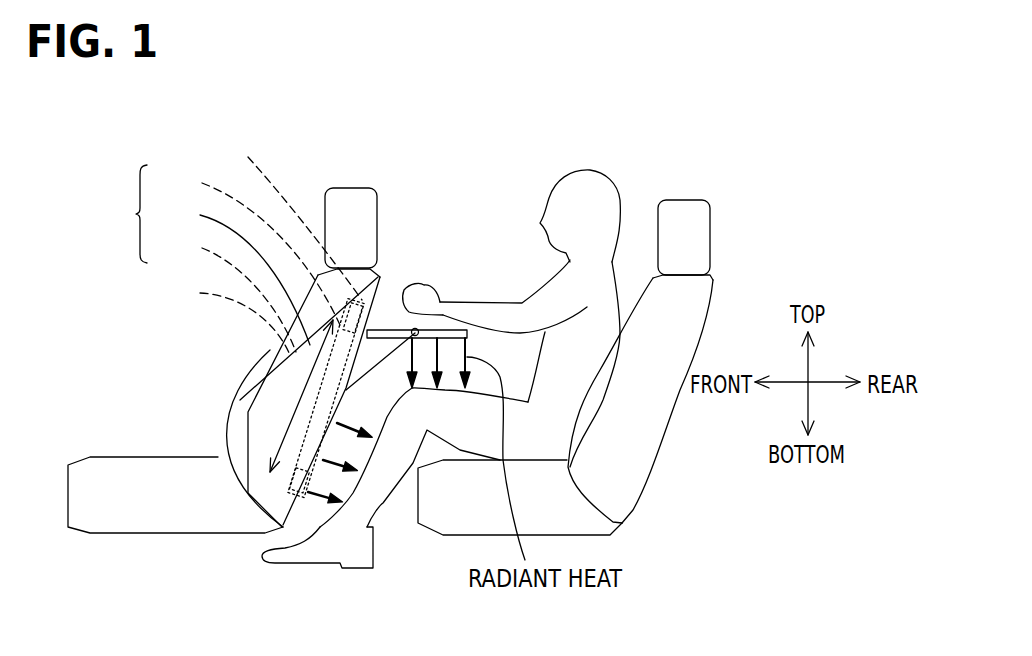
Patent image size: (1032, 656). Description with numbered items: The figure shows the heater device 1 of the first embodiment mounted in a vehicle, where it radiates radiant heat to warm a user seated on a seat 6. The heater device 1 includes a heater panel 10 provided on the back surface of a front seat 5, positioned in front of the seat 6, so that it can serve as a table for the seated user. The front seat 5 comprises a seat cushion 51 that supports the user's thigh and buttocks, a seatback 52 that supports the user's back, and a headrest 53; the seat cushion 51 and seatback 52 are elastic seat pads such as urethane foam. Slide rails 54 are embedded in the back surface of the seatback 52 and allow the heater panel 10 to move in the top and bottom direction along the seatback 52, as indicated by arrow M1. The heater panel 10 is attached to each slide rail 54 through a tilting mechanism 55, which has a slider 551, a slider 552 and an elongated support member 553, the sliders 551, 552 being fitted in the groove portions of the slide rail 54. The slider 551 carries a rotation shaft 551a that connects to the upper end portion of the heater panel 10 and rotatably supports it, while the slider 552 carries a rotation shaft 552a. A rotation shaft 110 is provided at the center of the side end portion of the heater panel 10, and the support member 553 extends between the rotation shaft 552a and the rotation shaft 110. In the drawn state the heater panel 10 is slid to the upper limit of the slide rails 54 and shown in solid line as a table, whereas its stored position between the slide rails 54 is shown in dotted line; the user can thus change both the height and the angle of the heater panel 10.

The heater device 1 is at (428, 323).
The front seat 5 is at (336, 188).
The seat 6 is at (678, 200).
The heater panel 10 is at (387, 328).
The rotation shaft 110 is at (414, 328).
The seat cushion 51 is at (82, 457).
The seatback 52 is at (232, 398).
The headrest 53 is at (367, 188).
The slide rail 54 is at (286, 480).
The tilting mechanism 55 is at (123, 214).
The slider 551 is at (243, 246).
The rotation shaft 551a is at (290, 215).
The slider 552 is at (221, 291).
The rotation shaft 552a is at (210, 316).
The support member 553 is at (228, 272).
The arrow M1 is at (262, 372).